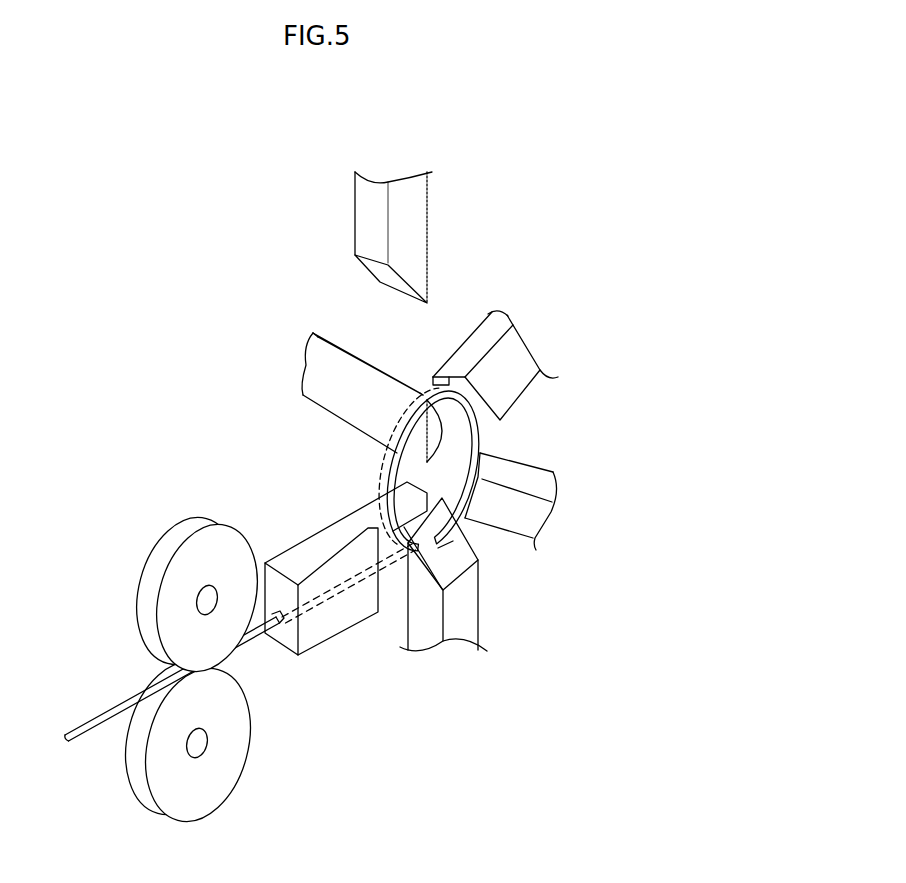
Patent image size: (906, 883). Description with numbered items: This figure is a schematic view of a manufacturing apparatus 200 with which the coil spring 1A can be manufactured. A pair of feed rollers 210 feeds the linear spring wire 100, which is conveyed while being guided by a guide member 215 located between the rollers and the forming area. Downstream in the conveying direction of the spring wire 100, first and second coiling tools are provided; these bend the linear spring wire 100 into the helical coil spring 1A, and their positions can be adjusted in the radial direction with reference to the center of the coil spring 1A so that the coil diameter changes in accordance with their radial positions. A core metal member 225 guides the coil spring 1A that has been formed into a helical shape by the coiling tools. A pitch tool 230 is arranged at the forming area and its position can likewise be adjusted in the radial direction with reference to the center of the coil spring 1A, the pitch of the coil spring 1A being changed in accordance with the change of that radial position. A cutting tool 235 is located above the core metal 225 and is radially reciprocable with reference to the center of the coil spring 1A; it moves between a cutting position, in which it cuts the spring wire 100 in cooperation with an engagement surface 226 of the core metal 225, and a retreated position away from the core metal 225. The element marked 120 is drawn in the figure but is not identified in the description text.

The manufacturing apparatus 200 is at (634, 200).
The spring wire 100 is at (72, 749).
The end portion 120 is at (446, 552).
The coil spring 1A is at (378, 478).
The feed rollers 210 is at (205, 788).
The guide member 215 is at (313, 630).
The core metal member 225 is at (301, 327).
The engagement surface 226 is at (313, 377).
The pitch tool 230 is at (464, 630).
The cutting tool 235 is at (412, 228).